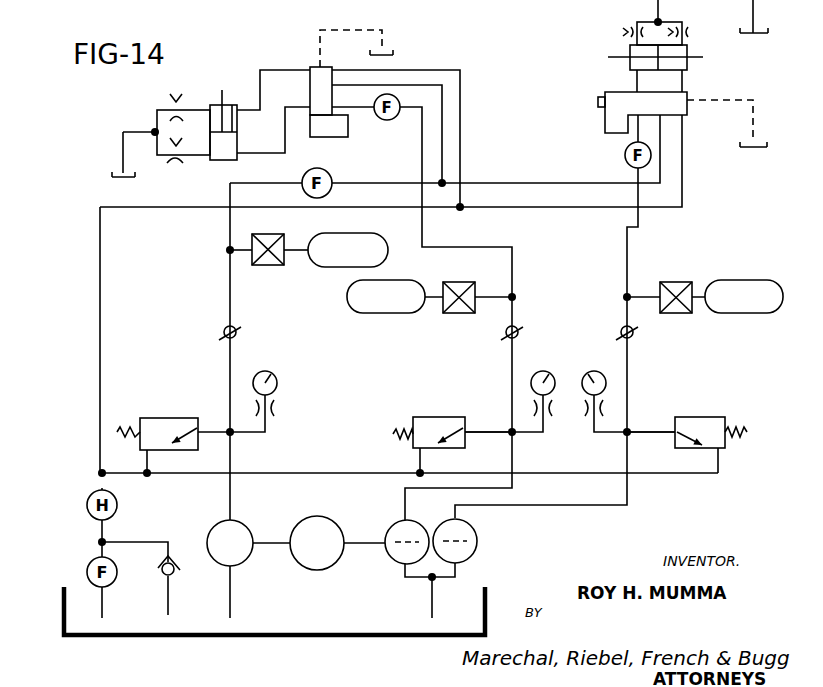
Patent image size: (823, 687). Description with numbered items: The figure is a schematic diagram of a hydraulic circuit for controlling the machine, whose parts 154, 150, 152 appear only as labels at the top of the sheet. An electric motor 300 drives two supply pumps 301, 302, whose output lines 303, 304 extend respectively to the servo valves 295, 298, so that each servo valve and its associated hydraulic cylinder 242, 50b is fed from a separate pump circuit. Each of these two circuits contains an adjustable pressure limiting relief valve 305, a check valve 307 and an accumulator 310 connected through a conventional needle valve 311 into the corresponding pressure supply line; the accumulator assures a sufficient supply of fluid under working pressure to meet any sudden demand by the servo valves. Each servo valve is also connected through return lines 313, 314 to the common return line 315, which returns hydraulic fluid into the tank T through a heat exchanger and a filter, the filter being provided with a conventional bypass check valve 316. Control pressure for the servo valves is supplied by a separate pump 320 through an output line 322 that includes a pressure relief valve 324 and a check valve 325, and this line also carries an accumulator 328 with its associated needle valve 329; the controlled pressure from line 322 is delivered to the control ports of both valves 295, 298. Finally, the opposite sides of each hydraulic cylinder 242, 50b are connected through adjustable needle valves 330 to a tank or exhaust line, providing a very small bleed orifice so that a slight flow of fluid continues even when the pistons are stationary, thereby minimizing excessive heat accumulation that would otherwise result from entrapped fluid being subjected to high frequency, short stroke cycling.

The cut-off label from adjacent sheet 154 is at (190, 7).
The cut-off label from adjacent sheet 150 is at (247, 7).
The cut-off label from adjacent sheet 152 is at (300, 7).
The adjustable needle valve 330 is at (174, 135).
The hydraulic cylinder 242 is at (213, 108).
The servo valve 295 is at (335, 132).
The return line 313 is at (460, 138).
The output line 303 is at (422, 218).
The return line 314 is at (525, 207).
The return line 315 is at (100, 270).
The needle valve 329 is at (267, 266).
The accumulator 328 is at (327, 267).
The accumulator 310 is at (388, 314).
The needle valve 311 is at (462, 314).
The check valve 325 is at (226, 326).
The check valve 307 is at (522, 332).
The output line 304 is at (627, 263).
The pressure relief valve 324 is at (173, 402).
The adjustable pressure limiting relief valve 305 is at (438, 419).
The output line 322 is at (230, 491).
The pump 320 is at (246, 530).
The electric motor 300 is at (322, 560).
The supply pump 301 is at (396, 530).
The supply pump 302 is at (470, 532).
The bypass check valve 316 is at (170, 578).
The servo valve 298 is at (607, 123).
The hydraulic cylinder 50b is at (682, 67).
The tank T is at (232, 638).